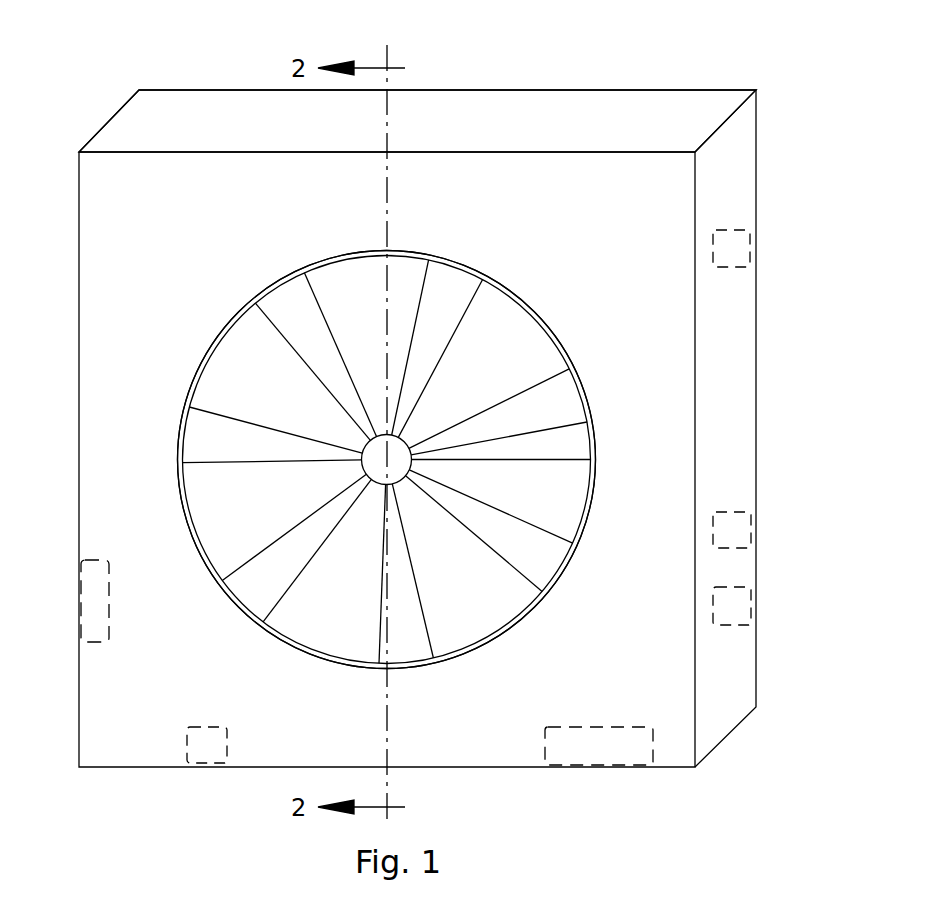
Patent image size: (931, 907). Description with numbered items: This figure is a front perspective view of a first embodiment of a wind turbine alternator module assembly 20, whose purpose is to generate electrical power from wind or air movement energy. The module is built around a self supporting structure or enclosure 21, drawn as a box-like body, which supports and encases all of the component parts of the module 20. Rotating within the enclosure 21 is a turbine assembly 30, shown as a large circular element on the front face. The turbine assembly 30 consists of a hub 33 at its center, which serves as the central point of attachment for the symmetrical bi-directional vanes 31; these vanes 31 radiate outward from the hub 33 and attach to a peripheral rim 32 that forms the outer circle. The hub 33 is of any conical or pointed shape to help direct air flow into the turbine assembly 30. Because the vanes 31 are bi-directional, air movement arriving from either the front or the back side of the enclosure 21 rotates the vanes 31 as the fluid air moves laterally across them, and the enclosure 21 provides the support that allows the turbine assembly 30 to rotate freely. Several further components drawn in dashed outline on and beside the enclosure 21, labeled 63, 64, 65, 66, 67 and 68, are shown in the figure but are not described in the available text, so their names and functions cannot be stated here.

The wind turbine alternator module assembly 20 is at (508, 84).
The enclosure 21 is at (627, 102).
The turbine assembly 30 is at (237, 311).
The vanes 31 is at (558, 493).
The peripheral rim 32 is at (527, 610).
The hub 33 is at (540, 323).
The sensor 63 is at (730, 608).
The sensor 64 is at (733, 530).
The sensor 65 is at (730, 250).
The controller 66 is at (630, 748).
The power port 67 is at (93, 602).
The indicator 68 is at (203, 751).